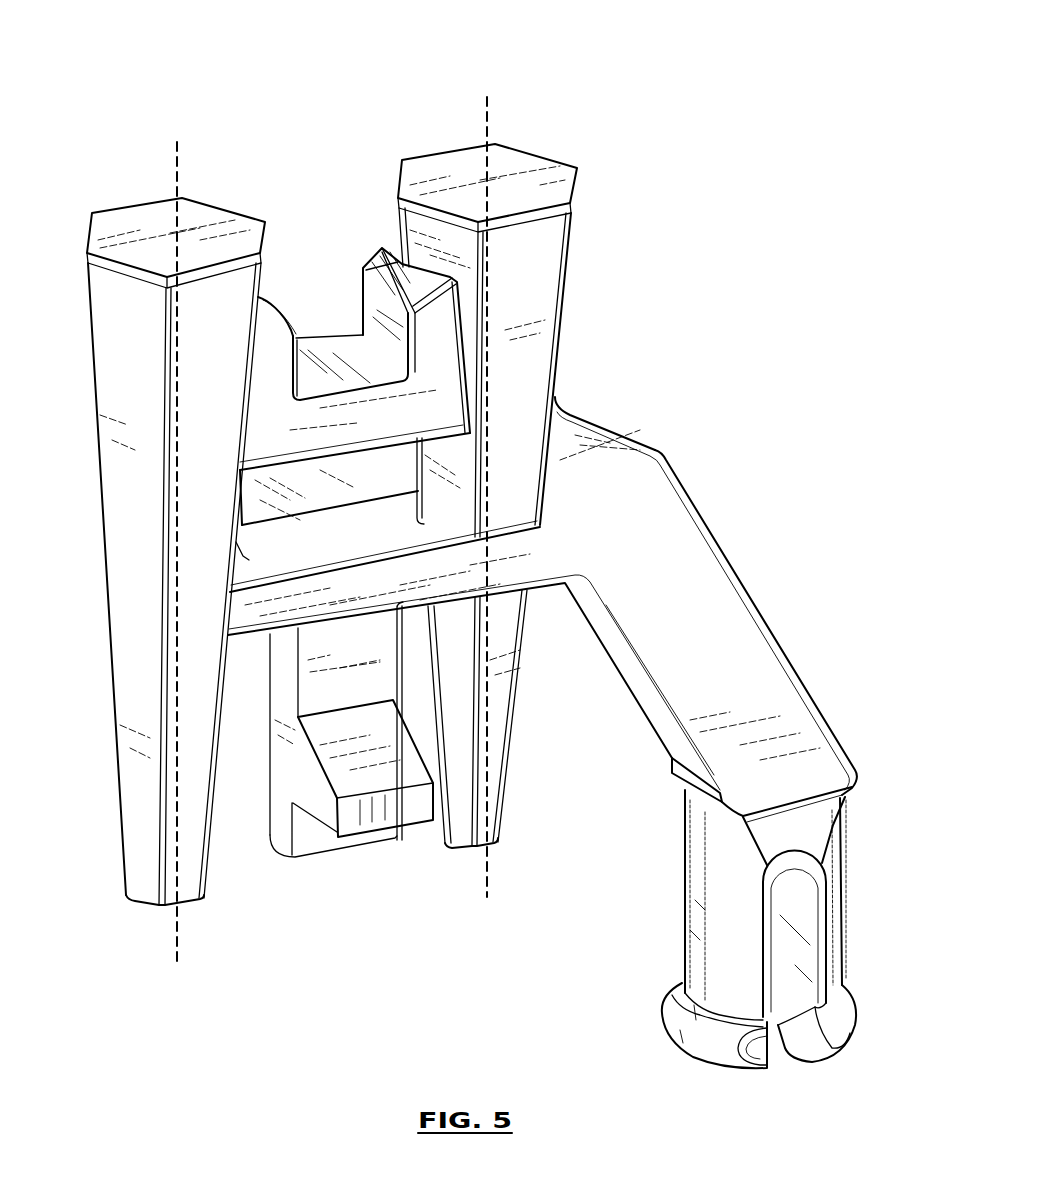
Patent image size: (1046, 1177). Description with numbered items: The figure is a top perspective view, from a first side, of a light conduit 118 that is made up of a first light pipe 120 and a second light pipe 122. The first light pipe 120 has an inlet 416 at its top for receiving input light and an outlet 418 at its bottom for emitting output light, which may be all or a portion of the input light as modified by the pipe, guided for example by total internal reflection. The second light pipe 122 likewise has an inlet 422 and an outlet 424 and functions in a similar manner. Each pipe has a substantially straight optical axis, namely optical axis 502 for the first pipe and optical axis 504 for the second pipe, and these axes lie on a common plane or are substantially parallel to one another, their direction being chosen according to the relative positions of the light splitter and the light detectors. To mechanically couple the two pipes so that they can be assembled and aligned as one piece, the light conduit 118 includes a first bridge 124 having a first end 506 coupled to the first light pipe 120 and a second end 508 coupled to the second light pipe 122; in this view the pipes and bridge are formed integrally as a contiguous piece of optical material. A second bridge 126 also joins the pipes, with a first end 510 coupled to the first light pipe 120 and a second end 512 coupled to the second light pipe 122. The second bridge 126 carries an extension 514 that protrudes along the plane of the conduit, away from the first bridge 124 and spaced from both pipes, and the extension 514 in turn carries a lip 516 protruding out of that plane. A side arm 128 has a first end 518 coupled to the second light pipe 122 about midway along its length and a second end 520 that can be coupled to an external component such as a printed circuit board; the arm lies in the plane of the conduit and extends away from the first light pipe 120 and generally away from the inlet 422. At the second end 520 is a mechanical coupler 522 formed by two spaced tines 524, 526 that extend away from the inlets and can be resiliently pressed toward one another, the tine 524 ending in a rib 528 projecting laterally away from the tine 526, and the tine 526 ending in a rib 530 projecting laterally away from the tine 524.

The first light pipe 120 is at (135, 559).
The inlet 416 is at (118, 220).
The outlet 418 is at (140, 903).
The optical axis 502 is at (180, 172).
The optical axis 504 is at (487, 130).
The second light pipe 122 is at (547, 498).
The inlet 422 is at (553, 167).
The outlet 424 is at (462, 845).
The first end 506 is at (255, 365).
The first bridge 124 is at (347, 363).
The second end 508 is at (378, 254).
The second bridge 126 is at (315, 527).
The second end 512 is at (378, 497).
The first end 510 is at (242, 563).
The side arm 128 is at (540, 625).
The light conduit 118 is at (555, 393).
The first end 518 is at (548, 470).
The extension 514 is at (323, 670).
The lip 516 is at (410, 810).
The second end 520 is at (745, 858).
The mechanical coupler 522 is at (783, 830).
The tine 524 is at (717, 927).
The tine 526 is at (842, 928).
The rib 528 is at (677, 1027).
The rib 530 is at (853, 1010).